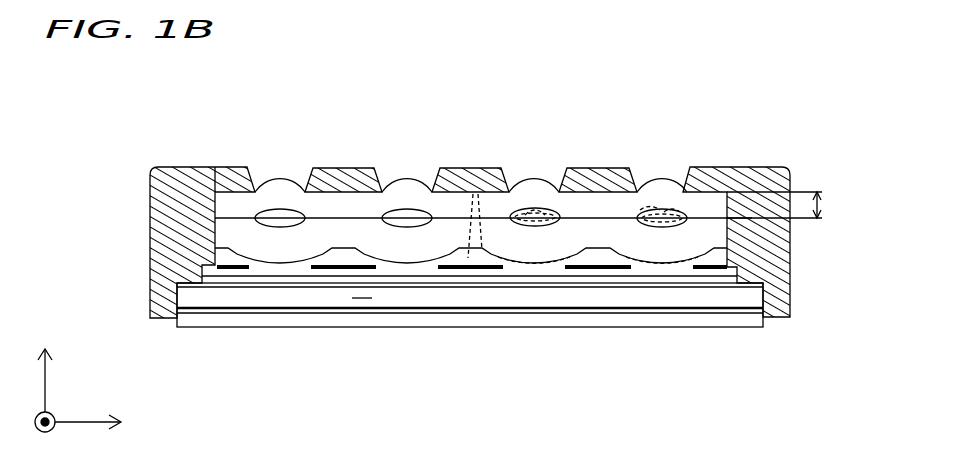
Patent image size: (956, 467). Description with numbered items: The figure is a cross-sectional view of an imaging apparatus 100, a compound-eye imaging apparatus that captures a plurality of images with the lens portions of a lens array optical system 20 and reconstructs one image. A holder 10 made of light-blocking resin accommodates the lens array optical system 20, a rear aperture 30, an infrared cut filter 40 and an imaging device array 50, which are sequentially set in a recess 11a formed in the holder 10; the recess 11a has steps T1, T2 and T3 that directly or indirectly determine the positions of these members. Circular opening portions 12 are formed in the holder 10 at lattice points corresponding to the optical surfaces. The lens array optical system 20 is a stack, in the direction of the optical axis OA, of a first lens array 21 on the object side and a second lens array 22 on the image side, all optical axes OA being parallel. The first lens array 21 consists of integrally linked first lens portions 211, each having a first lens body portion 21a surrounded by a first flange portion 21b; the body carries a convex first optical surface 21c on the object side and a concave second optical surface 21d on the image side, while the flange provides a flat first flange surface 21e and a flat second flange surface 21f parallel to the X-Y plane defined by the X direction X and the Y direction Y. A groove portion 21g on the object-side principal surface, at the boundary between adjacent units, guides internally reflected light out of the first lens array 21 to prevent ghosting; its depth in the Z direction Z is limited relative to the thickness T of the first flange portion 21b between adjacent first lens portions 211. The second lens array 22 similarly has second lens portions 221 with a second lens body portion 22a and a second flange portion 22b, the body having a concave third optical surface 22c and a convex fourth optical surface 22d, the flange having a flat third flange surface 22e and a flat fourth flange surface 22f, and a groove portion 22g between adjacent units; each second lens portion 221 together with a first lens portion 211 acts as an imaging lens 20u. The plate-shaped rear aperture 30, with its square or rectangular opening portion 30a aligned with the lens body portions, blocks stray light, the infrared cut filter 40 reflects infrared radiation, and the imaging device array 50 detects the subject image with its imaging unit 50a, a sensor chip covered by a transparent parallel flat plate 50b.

The imaging apparatus 100 is at (833, 71).
The holder 10 is at (168, 228).
The lens array optical system 20 is at (196, 200).
The imaging lens 20u is at (752, 220).
The circular opening portions 12 is at (302, 186).
The first lens portions 211 is at (284, 179).
The first lens array 21 is at (213, 208).
The first lens body portion 21a is at (538, 208).
The first flange portion 21b is at (478, 194).
The first optical surface 21c is at (650, 206).
The second optical surface 21d is at (671, 206).
The first flange surface 21e is at (726, 188).
The second flange surface 21f is at (742, 188).
The groove portion 21g is at (473, 194).
The second lens array 22 is at (235, 244).
The second lens portions 221 is at (273, 263).
The second lens body portion 22a is at (566, 262).
The second flange portion 22b is at (484, 252).
The third optical surface 22c is at (670, 256).
The fourth optical surface 22d is at (638, 258).
The third flange surface 22e is at (598, 256).
The fourth flange surface 22f is at (735, 256).
The groove portion 22g is at (470, 262).
The rear aperture 30 is at (204, 268).
The opening portion 30a is at (246, 272).
The infrared cut filter 40 is at (204, 276).
The imaging device array 50 is at (173, 328).
The imaging unit 50a is at (256, 288).
The transparent parallel flat plate 50b is at (172, 313).
The recess 11a is at (362, 300).
The thickness T is at (822, 205).
The step T1 is at (220, 214).
The step T2 is at (205, 262).
The step T3 is at (188, 302).
The optical axis OA is at (280, 80).
The X direction X is at (32, 436).
The Y direction Y is at (95, 438).
The Z direction Z is at (32, 374).